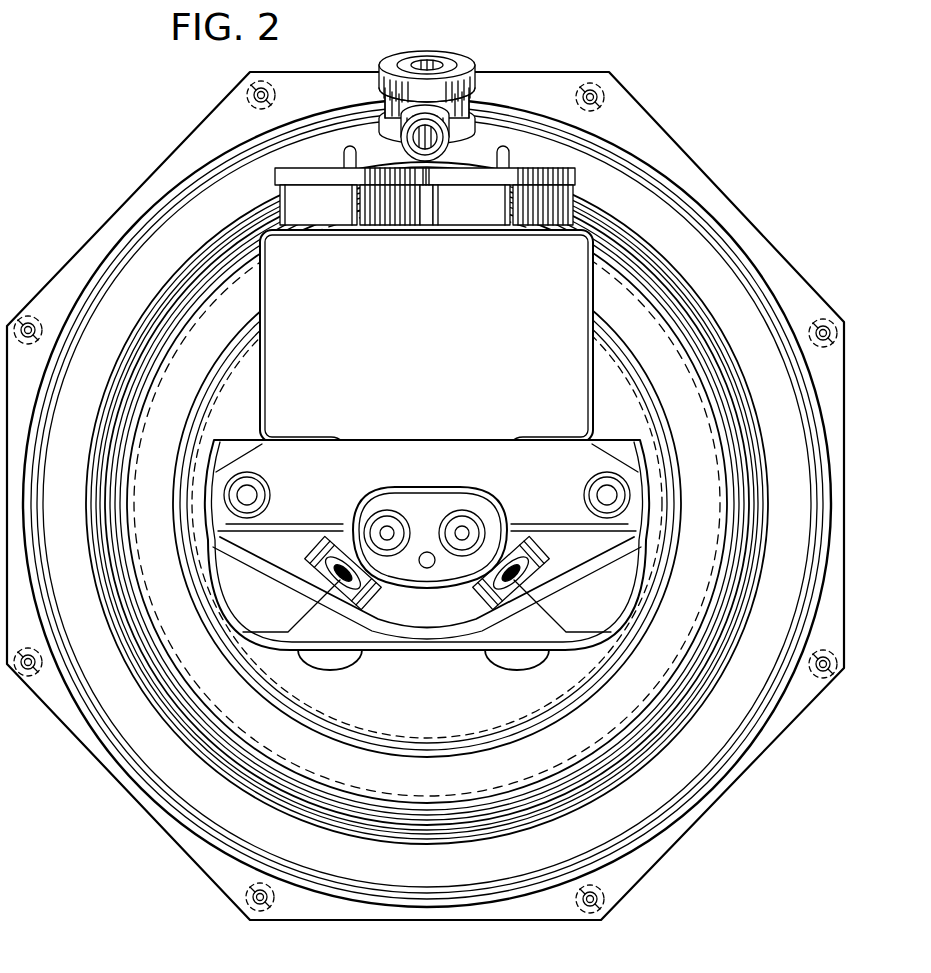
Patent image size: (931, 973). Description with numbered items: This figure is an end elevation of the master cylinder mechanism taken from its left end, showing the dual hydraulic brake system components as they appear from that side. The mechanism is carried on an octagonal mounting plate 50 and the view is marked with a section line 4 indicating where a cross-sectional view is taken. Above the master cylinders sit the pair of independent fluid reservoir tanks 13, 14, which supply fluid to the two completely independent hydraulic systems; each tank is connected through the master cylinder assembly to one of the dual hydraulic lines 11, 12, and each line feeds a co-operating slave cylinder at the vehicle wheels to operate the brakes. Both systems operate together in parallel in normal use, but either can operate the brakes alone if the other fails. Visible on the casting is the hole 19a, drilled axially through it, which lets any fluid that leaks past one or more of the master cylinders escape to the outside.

The octagonal mounting plate 50 is at (706, 178).
The fluid reservoir tank 13 is at (601, 250).
The fluid reservoir tank 14 is at (251, 248).
The hydraulic line 11 is at (235, 632).
The hydraulic line 12 is at (620, 632).
The hole 19a is at (427, 570).
The section line 4- 4 is at (224, 306).